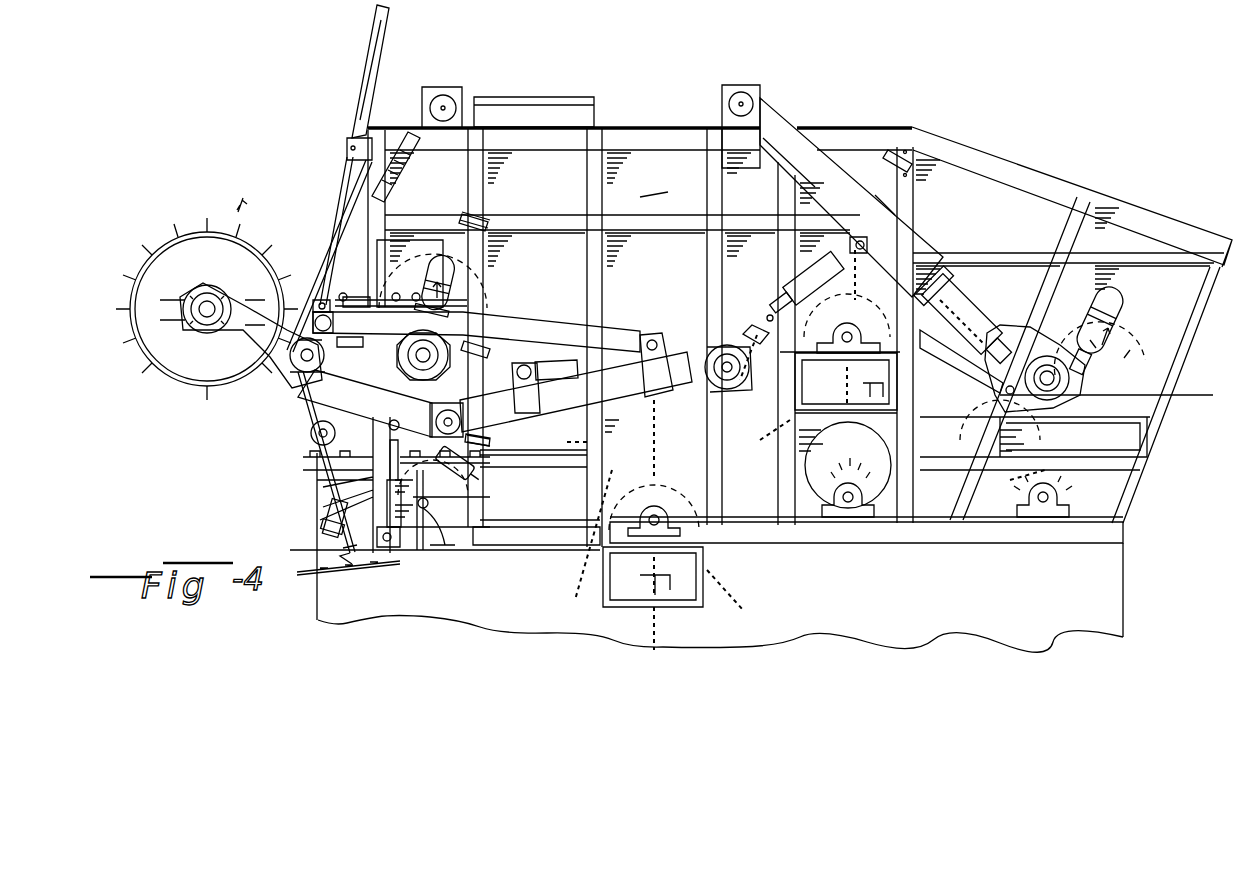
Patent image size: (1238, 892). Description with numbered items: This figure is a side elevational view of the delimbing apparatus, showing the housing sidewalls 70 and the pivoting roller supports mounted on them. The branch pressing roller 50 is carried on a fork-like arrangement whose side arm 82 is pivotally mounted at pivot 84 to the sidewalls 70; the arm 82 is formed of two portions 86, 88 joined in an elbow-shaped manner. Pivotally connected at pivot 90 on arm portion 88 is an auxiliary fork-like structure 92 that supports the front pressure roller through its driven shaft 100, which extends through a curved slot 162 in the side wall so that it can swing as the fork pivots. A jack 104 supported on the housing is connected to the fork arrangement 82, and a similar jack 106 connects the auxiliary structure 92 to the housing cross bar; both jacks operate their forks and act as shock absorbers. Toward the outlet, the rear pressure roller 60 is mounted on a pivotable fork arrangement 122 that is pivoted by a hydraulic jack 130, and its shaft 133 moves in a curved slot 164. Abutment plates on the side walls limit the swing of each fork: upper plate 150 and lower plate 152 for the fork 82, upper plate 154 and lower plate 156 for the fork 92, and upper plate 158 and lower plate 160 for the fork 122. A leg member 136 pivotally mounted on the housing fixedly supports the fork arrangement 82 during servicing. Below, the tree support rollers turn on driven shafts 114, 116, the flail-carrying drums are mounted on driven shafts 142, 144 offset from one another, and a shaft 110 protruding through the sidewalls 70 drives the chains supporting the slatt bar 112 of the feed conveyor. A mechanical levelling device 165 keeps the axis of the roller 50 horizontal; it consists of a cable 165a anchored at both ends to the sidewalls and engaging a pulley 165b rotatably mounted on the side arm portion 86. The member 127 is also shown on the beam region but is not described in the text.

The branch pressing roller 50 is at (190, 222).
The jack 106 is at (382, 68).
The mechanical levelling device 165 is at (322, 272).
The cable 165a is at (352, 205).
The pulley 165b is at (307, 380).
The side arm 82 is at (283, 385).
The arm portion 86 is at (290, 372).
The upper plate 154 is at (478, 222).
The curved slot 162 is at (450, 266).
The driven shaft 100 is at (478, 312).
The lower plate 156 is at (470, 345).
The upper plate 150 is at (507, 357).
The lower plate 152 is at (490, 437).
The leg member 136 is at (447, 473).
The jack 104 is at (404, 520).
The shaft 110 is at (440, 530).
The slatt bar 112 is at (307, 573).
The driven shaft 144 is at (655, 530).
The sidewalls 70 is at (654, 185).
The auxiliary fork-like structure 92 is at (578, 330).
The pivot 90 is at (656, 340).
The arm portion 88 is at (620, 397).
The pivot 84 is at (727, 380).
The beam 127 is at (775, 120).
The pivotable fork arrangement 122 is at (848, 180).
The upper plate 158 is at (920, 168).
The lower plate 160 is at (945, 258).
The hydraulic jack 130 is at (796, 302).
The driven shaft 142 is at (847, 329).
The curved slot 164 is at (1105, 312).
The rear pressure roller 60 is at (1112, 368).
The shaft 133 is at (1050, 378).
The driven shaft 114 is at (848, 505).
The driven shaft 116 is at (1043, 505).